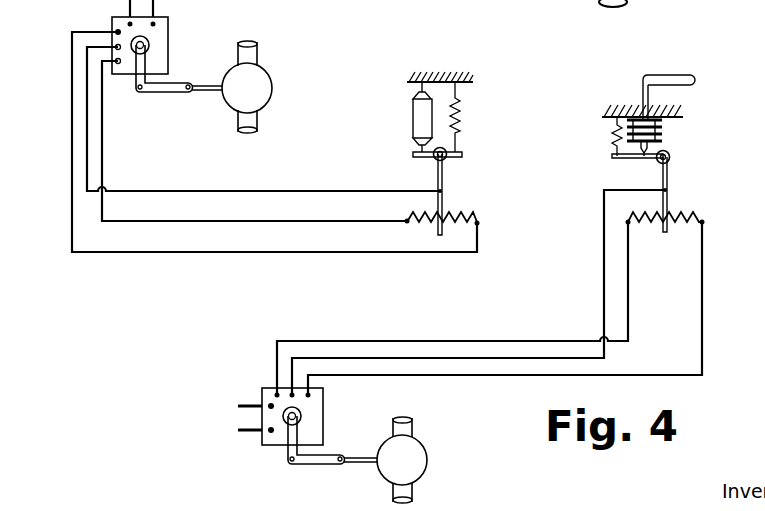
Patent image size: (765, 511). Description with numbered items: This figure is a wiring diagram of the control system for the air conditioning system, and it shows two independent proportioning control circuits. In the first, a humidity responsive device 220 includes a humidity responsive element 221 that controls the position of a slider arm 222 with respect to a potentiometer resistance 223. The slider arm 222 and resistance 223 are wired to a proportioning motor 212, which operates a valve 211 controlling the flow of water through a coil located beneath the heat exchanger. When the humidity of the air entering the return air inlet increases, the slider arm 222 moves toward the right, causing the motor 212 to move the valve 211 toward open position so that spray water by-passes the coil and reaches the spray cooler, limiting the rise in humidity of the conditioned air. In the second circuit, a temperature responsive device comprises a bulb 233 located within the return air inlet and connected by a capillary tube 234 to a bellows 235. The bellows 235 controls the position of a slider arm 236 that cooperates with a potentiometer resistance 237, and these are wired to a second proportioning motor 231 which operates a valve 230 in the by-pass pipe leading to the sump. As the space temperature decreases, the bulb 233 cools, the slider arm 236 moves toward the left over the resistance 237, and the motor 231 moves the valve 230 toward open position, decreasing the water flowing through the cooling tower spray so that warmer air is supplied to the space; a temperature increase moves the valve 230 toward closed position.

The valve 211 is at (267, 81).
The proportioning motor 212 is at (162, 43).
The humidity responsive device 220 is at (481, 132).
The humidity responsive element 221 is at (418, 116).
The slider arm 222 is at (447, 208).
The potentiometer resistance 223 is at (458, 213).
The valve 230 is at (422, 452).
The proportioning motor 231 is at (318, 405).
The bulb 233 is at (687, 85).
The capillary tube 234 is at (643, 88).
The bellows 235 is at (662, 127).
The slider arm 236 is at (668, 201).
The potentiometer resistance 237 is at (679, 227).